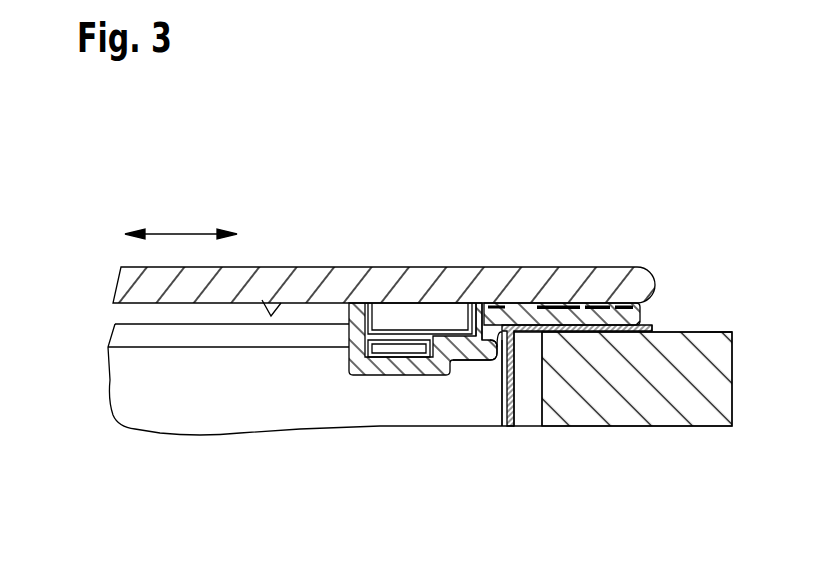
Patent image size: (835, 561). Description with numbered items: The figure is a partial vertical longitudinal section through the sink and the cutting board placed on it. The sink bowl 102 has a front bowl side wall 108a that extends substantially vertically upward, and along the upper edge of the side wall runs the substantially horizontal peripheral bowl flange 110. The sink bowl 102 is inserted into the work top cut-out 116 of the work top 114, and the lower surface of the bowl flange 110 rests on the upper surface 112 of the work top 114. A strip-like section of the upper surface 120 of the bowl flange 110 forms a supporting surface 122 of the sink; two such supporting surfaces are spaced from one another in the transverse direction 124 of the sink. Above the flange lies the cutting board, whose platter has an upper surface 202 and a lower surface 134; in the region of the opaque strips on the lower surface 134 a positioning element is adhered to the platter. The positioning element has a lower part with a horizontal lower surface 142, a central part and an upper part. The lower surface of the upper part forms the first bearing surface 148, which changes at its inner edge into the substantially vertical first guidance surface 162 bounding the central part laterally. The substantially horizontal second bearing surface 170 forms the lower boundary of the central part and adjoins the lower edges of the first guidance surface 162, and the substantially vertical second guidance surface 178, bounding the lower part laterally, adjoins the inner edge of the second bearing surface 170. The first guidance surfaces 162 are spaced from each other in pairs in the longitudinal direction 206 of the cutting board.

The sink bowl 102 is at (478, 355).
The front bowl side wall 108a is at (503, 374).
The bowl flange 110 is at (655, 328).
The upper surface of the work top 112 is at (713, 332).
The work top 114 is at (712, 426).
The work top cut-out 116 is at (535, 390).
The upper surface of the bowl flange 120 is at (641, 313).
The supporting surface 122 is at (583, 325).
The transverse direction of the sink 124 is at (138, 193).
The lower surface of the platter 134 is at (281, 303).
The lower surface of the lower part 142 is at (390, 386).
The first bearing surface 148 is at (637, 335).
The first guidance surface 162 is at (523, 312).
The second bearing surface 170 is at (484, 312).
The second guidance surface 178 is at (465, 362).
The upper surface of the cutting board 202 is at (381, 257).
The longitudinal direction of the cutting board 206 is at (184, 232).